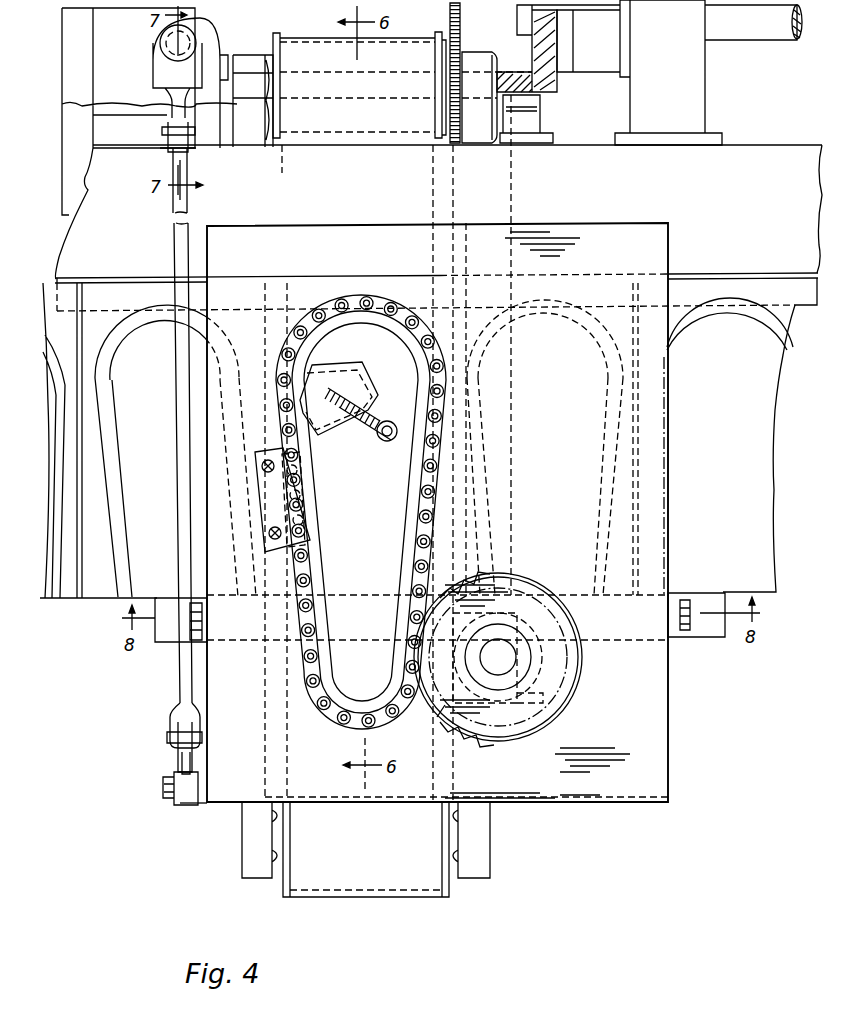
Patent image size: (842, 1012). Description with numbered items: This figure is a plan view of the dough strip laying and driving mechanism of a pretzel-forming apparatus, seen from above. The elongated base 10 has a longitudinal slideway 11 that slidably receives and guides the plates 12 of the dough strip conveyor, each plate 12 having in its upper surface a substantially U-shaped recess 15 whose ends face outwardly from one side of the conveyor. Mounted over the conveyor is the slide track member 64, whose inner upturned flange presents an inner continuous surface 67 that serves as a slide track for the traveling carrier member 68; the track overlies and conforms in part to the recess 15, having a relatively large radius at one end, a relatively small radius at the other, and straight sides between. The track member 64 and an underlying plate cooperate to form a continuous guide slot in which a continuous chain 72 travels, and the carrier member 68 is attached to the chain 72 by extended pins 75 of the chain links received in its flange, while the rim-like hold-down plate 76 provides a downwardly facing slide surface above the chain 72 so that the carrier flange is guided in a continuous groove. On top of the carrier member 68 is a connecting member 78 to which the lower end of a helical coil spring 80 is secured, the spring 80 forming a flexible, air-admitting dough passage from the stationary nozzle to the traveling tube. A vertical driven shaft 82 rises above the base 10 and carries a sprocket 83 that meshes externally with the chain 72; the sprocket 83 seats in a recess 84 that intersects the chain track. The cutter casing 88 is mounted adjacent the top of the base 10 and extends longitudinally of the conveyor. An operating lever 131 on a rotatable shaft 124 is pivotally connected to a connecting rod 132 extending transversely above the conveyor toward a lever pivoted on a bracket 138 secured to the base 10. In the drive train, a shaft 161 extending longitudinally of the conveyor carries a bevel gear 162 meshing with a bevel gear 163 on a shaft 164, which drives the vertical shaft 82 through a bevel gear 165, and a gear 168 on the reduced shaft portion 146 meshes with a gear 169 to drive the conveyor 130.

The base 10 is at (762, 155).
The longitudinal slideway 11 is at (768, 275).
The plates 12 is at (690, 290).
The U-shaped recess 15 is at (122, 540).
The slide track member 64 is at (668, 722).
The inner continuous surface 67 is at (428, 499).
The traveling carrier member 68 is at (328, 437).
The continuous chain 72 is at (306, 576).
The extended pins 75 is at (282, 406).
The hold-down plate 76 is at (264, 521).
The connecting member 78 is at (360, 376).
The helical coil spring 80 is at (385, 424).
The vertical driven shaft 82 is at (506, 656).
The sprocket 83 is at (477, 740).
The recess 84 is at (443, 710).
The casing 88 is at (627, 640).
The rotatable shaft 124 is at (212, 808).
The conveyor 130 is at (391, 895).
The operating lever 131 is at (182, 755).
The connecting rod 132 is at (180, 675).
The bracket 138 is at (134, 80).
The reduced shaft portion 146 is at (227, 55).
The shaft 161 is at (748, 37).
The bevel gear 162 is at (557, 50).
The bevel gear 163 is at (538, 89).
The shaft 164 is at (517, 205).
The bevel gear 165 is at (530, 711).
The gear 168 is at (458, 12).
The gear 169 is at (442, 86).